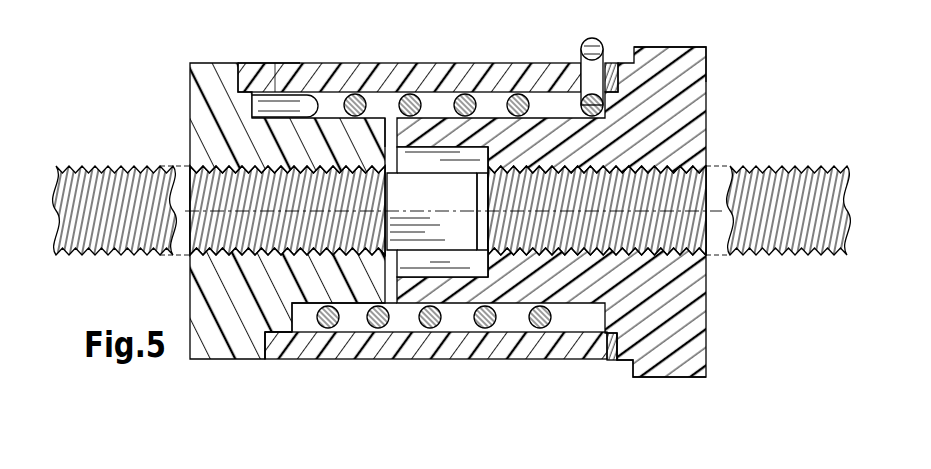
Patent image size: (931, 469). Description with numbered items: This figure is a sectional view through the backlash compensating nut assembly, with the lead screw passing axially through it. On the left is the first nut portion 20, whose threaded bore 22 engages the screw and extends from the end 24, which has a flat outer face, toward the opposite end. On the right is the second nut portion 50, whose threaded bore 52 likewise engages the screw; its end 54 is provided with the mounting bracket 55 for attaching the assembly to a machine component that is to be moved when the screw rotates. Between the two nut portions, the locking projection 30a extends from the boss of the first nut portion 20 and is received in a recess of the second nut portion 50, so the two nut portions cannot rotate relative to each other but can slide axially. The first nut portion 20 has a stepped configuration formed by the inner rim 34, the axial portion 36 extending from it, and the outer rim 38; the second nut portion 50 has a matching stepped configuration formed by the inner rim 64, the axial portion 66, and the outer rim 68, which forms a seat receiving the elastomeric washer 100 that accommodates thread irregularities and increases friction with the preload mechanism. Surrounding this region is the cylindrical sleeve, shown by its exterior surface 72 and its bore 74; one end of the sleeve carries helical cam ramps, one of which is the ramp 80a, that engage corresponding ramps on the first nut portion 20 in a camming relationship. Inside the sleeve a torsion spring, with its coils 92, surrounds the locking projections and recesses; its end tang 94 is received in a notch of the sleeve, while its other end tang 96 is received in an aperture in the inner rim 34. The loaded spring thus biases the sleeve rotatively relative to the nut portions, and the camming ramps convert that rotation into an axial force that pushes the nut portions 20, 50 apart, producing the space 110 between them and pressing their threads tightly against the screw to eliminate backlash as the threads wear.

The first nut portion 20 is at (160, 267).
The threaded bore 22 is at (222, 190).
The end 24 is at (190, 103).
The locking projection 30a is at (408, 200).
The inner rim 34 is at (293, 312).
The axial portion 36 is at (278, 335).
The outer rim 38 is at (266, 347).
The second nut portion 50 is at (739, 275).
The threaded bore 52 is at (677, 200).
The end 54 is at (706, 82).
The mounting bracket 55 is at (680, 72).
The inner rim 64 is at (603, 312).
The axial portion 66 is at (604, 327).
The outer rim 68 is at (618, 343).
The exterior surface 72 is at (462, 62).
The bore 74 is at (448, 318).
The ramp 80a is at (272, 31).
The coils 92 is at (352, 98).
The end tang 94 is at (582, 50).
The end tang 96 is at (272, 106).
The elastomeric washer 100 is at (610, 62).
The space 110 is at (392, 135).